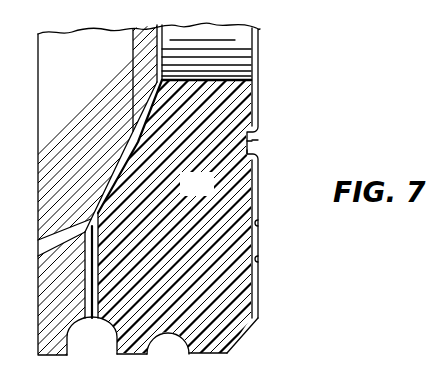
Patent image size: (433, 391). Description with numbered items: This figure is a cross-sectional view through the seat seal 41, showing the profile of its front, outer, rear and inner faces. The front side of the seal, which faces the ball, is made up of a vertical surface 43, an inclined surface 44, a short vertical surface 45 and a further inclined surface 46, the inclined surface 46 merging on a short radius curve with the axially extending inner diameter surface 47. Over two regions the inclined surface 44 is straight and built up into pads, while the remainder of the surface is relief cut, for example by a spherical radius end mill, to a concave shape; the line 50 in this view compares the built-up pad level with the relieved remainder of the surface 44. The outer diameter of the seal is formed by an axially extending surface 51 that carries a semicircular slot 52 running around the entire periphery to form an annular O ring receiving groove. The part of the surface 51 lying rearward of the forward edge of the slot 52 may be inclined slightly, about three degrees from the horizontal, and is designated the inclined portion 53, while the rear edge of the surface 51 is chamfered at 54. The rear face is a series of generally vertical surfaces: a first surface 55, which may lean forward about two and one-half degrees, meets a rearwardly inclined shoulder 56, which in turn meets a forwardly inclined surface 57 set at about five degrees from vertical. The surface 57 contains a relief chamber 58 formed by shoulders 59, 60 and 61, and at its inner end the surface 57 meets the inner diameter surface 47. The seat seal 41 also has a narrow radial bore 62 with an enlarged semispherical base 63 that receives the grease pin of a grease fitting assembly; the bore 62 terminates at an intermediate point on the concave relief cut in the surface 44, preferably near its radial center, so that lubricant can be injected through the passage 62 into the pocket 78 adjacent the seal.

The seat seal 41 is at (208, 194).
The vertical surface 43 is at (38, 312).
The inclined surface 44 is at (55, 248).
The short vertical surface 45 is at (110, 127).
The inclined surface 46 is at (147, 100).
The inner diameter surface 47 is at (232, 78).
The line 50 is at (77, 215).
The axially extending surface 51 is at (124, 356).
The semicircular slot 52 is at (179, 355).
The inclined portion 53 is at (228, 354).
The chamfer 54 is at (243, 341).
The first rear surface 55 is at (259, 259).
The rearwardly inclined shoulder 56 is at (259, 223).
The forwardly inclined surface 57 is at (259, 185).
The relief chamber 58 is at (250, 141).
The shoulder 59 is at (254, 153).
The shoulder 60 is at (258, 143).
The shoulder 61 is at (258, 128).
The radial bore 62 is at (103, 249).
The semispherical base 63 is at (99, 346).
The pocket 78 is at (98, 194).